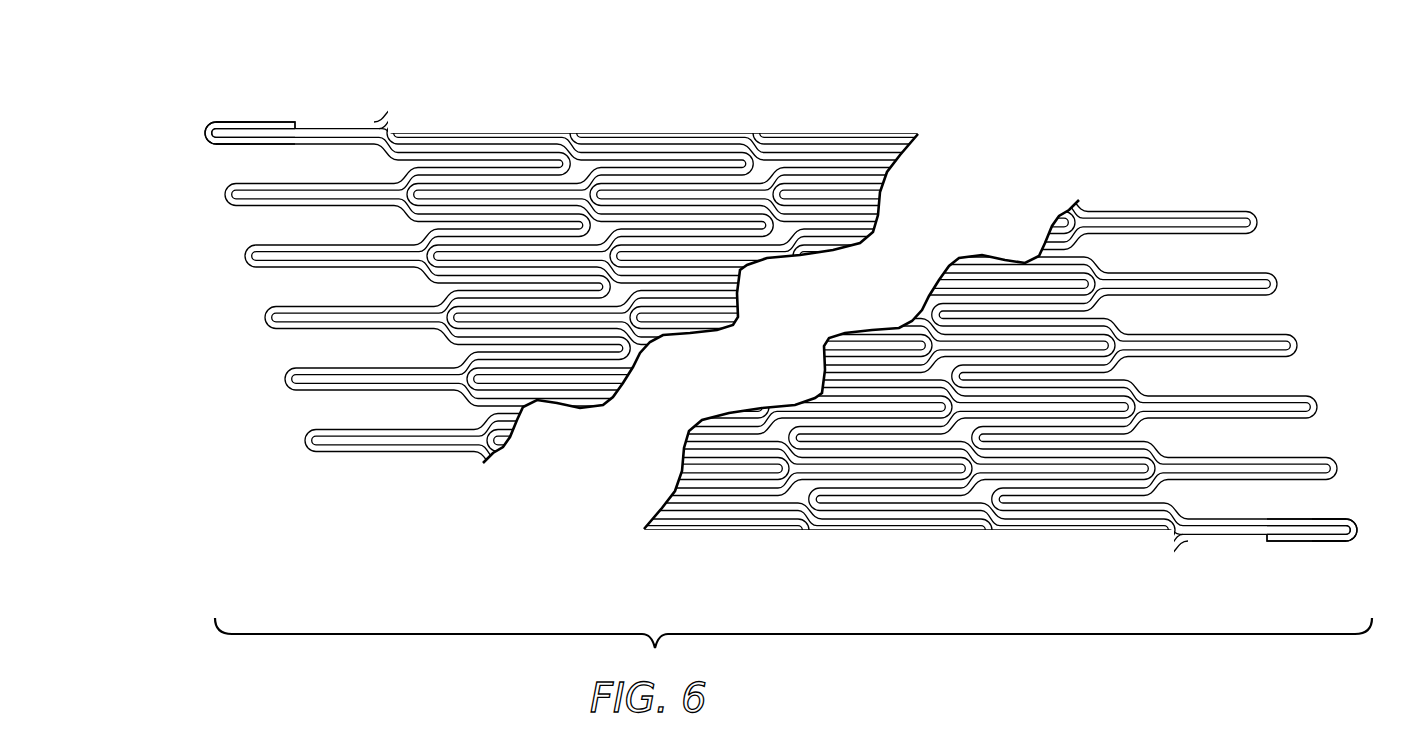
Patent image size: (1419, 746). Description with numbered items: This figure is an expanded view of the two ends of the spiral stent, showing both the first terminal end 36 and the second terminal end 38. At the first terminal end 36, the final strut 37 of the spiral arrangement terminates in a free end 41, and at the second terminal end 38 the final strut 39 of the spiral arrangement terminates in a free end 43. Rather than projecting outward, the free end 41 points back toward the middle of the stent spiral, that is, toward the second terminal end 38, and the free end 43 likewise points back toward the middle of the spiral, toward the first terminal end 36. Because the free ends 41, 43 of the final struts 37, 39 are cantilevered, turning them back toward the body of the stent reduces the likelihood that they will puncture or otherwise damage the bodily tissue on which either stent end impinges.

The first terminal end 36 is at (563, 270).
The final strut 37 is at (248, 107).
The second terminal end 38 is at (987, 381).
The final strut 39 is at (1318, 549).
The free end 41 is at (296, 122).
The free end 43 is at (1267, 540).